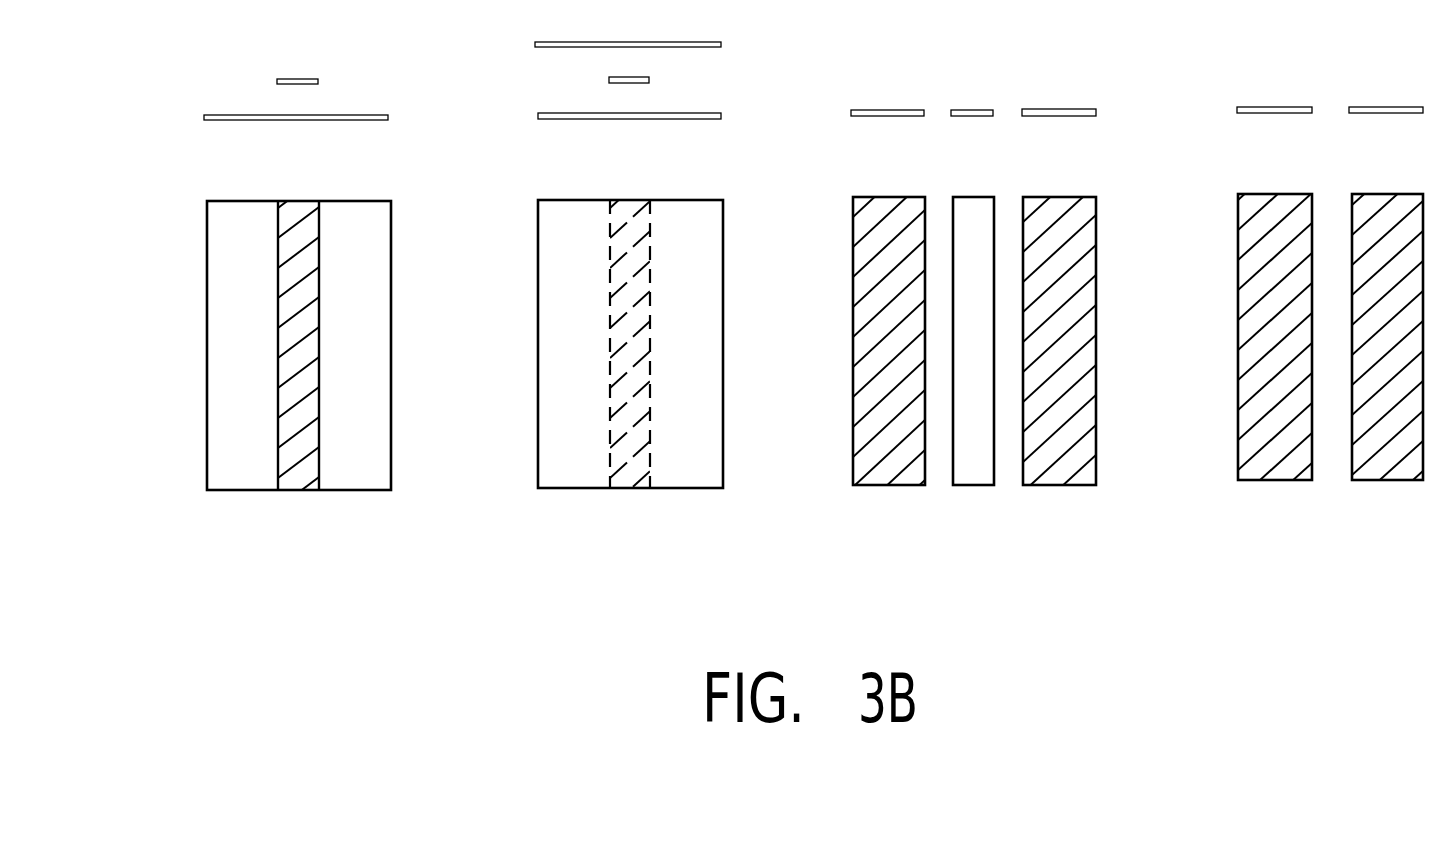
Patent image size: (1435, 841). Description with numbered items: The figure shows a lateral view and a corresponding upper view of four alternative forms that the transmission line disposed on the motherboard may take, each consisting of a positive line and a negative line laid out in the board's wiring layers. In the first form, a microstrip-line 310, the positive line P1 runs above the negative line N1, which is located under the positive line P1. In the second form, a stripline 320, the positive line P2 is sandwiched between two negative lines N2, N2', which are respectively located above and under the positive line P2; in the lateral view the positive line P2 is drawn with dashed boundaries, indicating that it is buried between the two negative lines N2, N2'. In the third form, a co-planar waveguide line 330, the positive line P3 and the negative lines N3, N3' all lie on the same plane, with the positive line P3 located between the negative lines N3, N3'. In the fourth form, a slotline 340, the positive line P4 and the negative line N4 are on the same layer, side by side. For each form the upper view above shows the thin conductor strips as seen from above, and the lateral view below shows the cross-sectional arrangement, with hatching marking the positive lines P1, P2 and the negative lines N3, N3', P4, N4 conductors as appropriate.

The microstrip-line 310 is at (255, 325).
The stripline 320 is at (588, 302).
The co-planar waveguide line 330 is at (973, 322).
The slotline 340 is at (1330, 319).
The negative line N1 is at (218, 373).
The positive line P1 is at (241, 283).
The negative line N2 is at (588, 251).
The negative line N2' is at (608, 121).
The positive line P2 is at (572, 282).
The negative line N3 is at (888, 302).
The negative line N3' is at (1059, 305).
The positive line P3 is at (972, 271).
The positive line P4 is at (1274, 293).
The negative line N4 is at (1386, 295).